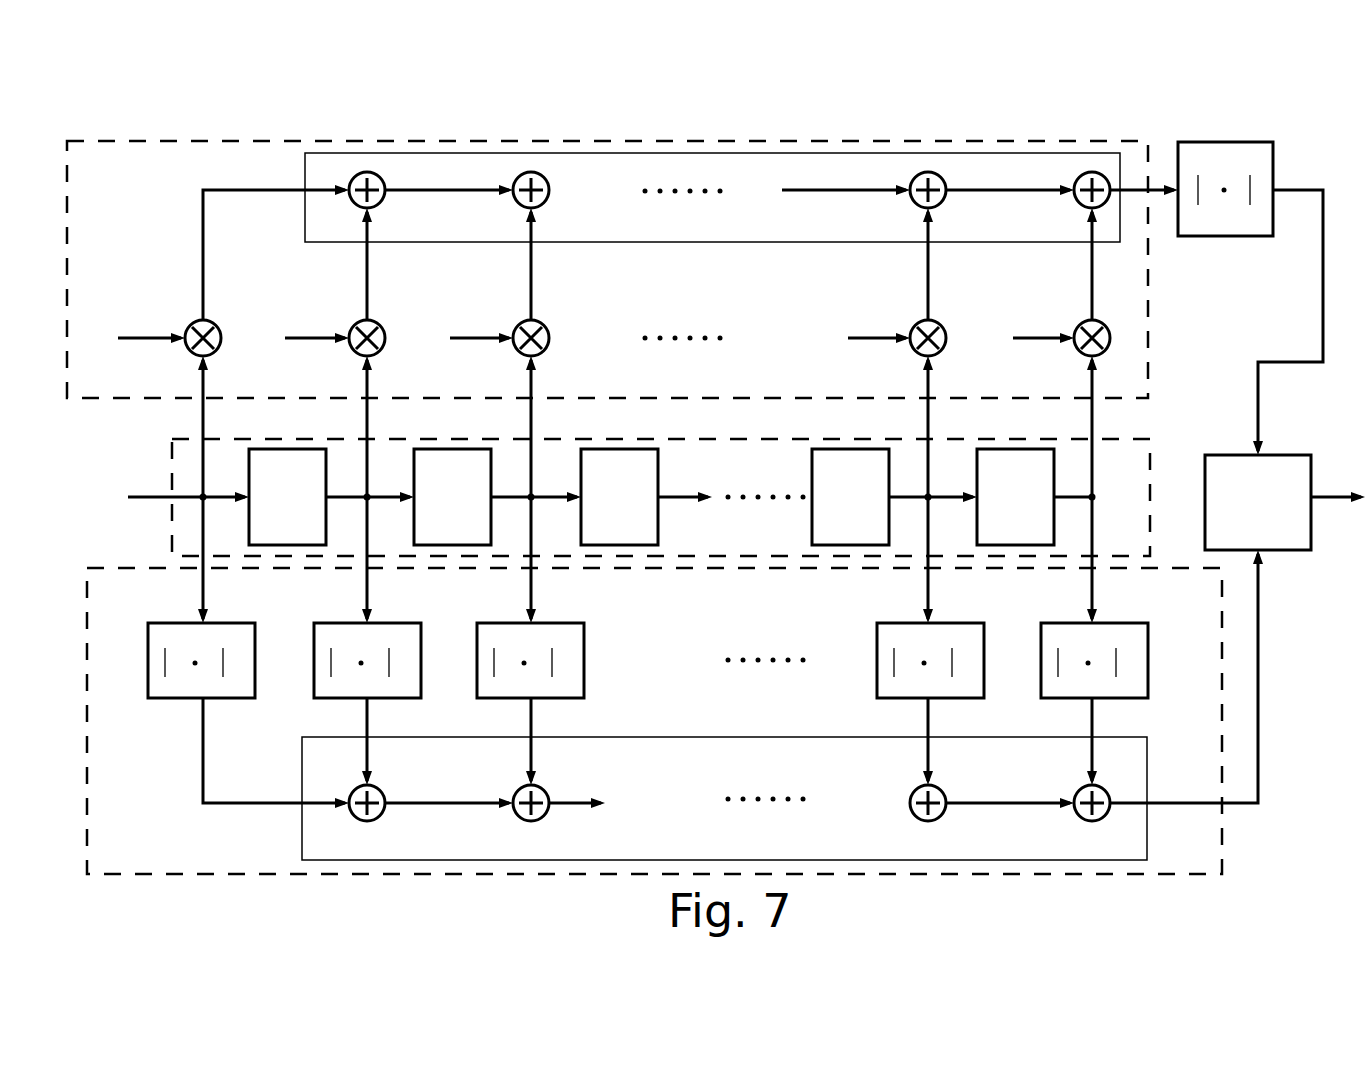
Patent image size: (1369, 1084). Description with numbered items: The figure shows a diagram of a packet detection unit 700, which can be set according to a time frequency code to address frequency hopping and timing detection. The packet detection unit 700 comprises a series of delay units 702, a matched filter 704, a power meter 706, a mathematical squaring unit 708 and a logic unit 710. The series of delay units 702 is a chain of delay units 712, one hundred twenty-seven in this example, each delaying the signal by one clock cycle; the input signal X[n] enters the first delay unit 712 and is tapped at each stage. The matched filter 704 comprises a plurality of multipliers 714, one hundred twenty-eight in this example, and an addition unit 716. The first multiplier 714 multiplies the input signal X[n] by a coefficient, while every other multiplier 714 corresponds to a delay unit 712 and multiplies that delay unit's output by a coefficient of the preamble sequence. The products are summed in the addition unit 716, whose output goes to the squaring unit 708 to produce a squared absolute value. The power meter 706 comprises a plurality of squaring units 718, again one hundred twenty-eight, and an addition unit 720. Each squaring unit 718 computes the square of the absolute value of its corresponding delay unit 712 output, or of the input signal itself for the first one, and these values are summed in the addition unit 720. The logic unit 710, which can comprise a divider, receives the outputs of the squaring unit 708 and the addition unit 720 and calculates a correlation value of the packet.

The packet detection unit 700 is at (280, 123).
The series of delay units 702 is at (1150, 439).
The matched filter 704 is at (1050, 140).
The power meter 706 is at (128, 568).
The mathematical squaring unit 708 is at (1250, 142).
The logic unit 710 is at (1283, 455).
The delay unit 712 is at (287, 449).
The multiplier 714 is at (205, 321).
The addition unit 716 is at (762, 152).
The squaring unit 718 is at (227, 623).
The addition unit 720 is at (1140, 737).